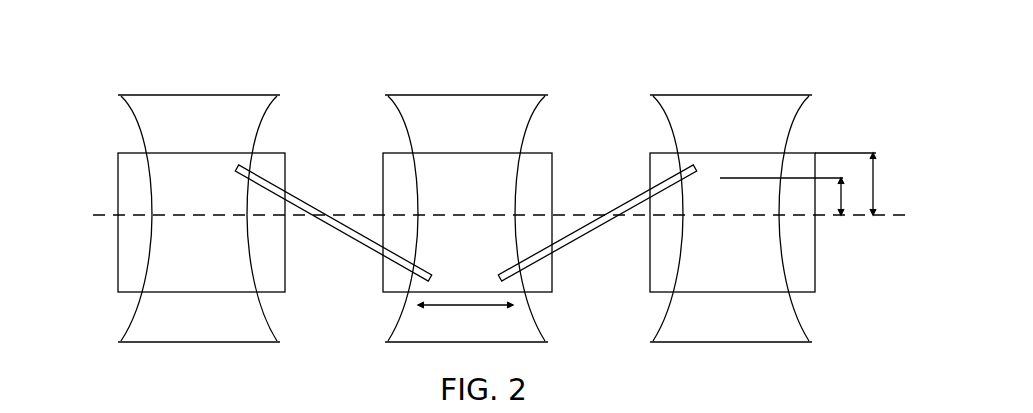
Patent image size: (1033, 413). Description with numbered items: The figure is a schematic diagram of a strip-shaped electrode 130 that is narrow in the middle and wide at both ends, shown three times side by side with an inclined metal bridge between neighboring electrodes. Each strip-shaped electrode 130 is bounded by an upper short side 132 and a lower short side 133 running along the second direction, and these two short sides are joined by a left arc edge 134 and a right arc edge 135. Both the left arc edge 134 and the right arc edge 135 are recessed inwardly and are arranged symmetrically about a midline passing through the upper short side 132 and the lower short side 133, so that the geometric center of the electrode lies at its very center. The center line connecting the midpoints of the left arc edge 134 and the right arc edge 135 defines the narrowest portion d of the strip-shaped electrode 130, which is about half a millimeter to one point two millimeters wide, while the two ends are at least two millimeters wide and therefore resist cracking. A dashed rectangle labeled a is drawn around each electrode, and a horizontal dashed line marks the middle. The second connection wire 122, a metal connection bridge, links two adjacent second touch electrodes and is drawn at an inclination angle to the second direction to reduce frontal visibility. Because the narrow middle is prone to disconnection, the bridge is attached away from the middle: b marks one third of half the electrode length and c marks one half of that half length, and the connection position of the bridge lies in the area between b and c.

The strip-shaped electrode 130 is at (442, 197).
The upper short side 132 is at (265, 95).
The lower short side 133 is at (160, 340).
The left arc edge 134 is at (150, 183).
The right arc edge 135 is at (253, 312).
The second connection wire 122 is at (307, 207).
The rectangular region a is at (118, 232).
The distance b is at (787, 196).
The distance c is at (850, 184).
The narrowest portion d is at (465, 315).